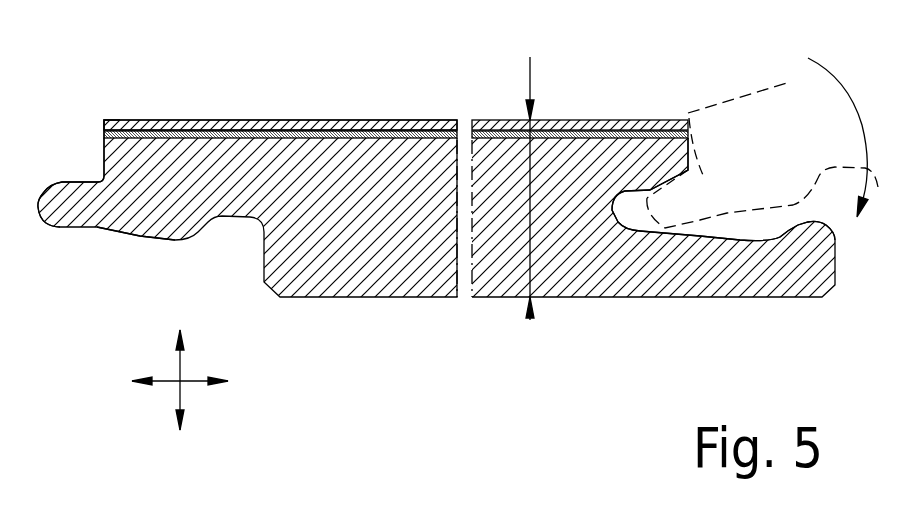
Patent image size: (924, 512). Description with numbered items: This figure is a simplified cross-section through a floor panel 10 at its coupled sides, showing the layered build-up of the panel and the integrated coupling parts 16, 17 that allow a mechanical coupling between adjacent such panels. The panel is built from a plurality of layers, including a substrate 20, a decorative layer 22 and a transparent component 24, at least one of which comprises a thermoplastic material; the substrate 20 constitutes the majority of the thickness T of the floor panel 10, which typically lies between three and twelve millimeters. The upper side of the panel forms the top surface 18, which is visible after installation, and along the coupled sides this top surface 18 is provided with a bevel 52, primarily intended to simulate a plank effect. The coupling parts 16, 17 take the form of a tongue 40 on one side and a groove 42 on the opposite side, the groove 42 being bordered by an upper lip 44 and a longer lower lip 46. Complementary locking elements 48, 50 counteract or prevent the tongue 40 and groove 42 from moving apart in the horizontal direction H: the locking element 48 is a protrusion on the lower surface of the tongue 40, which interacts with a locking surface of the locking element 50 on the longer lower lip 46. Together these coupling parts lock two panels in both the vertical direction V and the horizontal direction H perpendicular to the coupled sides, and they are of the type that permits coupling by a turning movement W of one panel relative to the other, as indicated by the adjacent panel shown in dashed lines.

The floor panel 10 is at (664, 75).
The coupling part 16 is at (64, 260).
The coupling part 17 is at (798, 175).
The top surface 18 is at (396, 91).
The substrate 20 is at (403, 180).
The decorative layer 22 is at (400, 138).
The transparent component 24 is at (232, 130).
The tongue 40 is at (60, 198).
The groove 42 is at (645, 196).
The upper lip 44 is at (657, 165).
The longer lower lip 46 is at (695, 242).
The locking element 48 is at (160, 237).
The locking element 50 is at (816, 226).
The bevel 52 is at (104, 120).
The thickness T is at (530, 78).
The turning movement W is at (842, 82).
The vertical direction V is at (180, 367).
The horizontal direction H is at (180, 383).